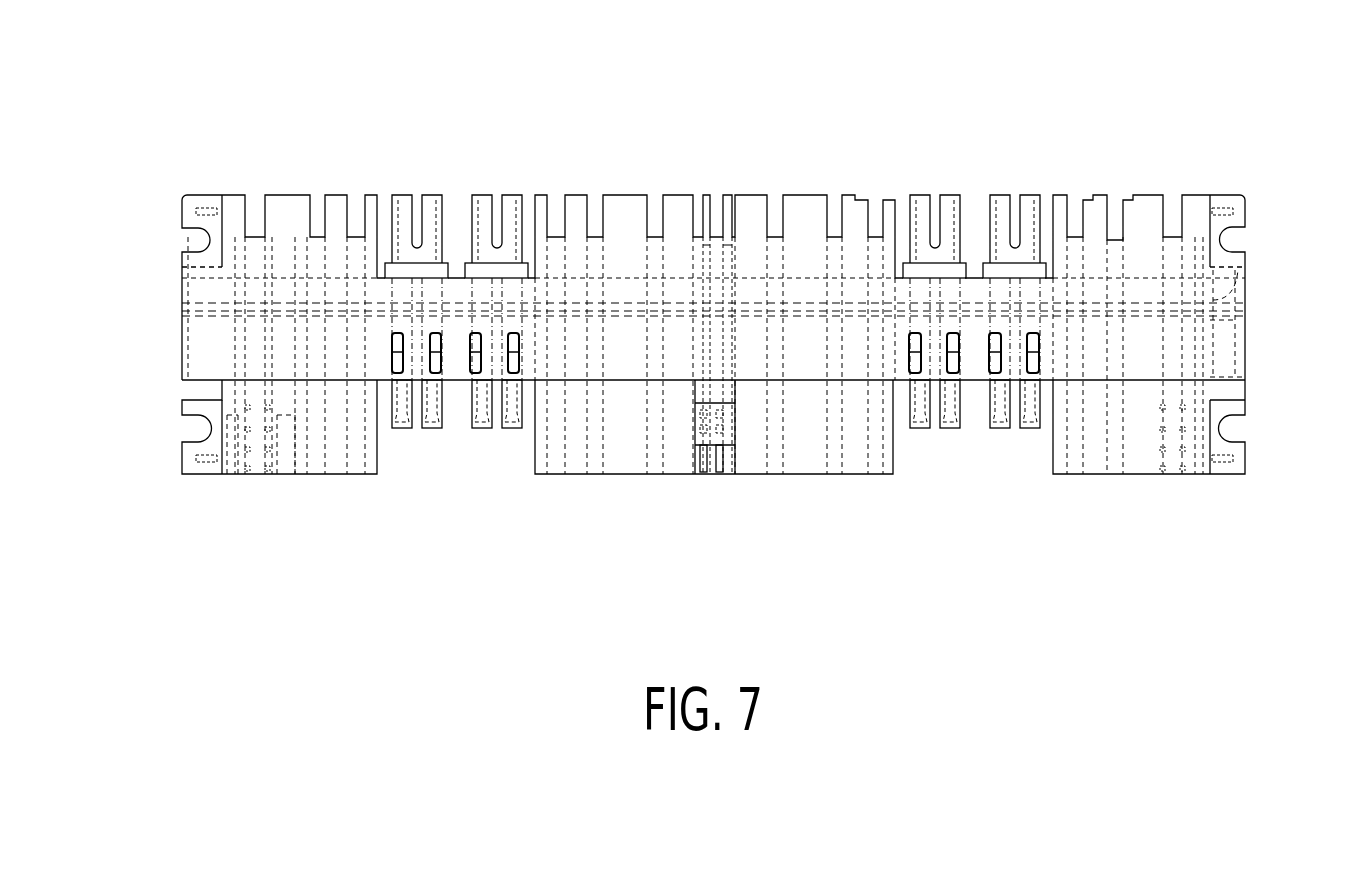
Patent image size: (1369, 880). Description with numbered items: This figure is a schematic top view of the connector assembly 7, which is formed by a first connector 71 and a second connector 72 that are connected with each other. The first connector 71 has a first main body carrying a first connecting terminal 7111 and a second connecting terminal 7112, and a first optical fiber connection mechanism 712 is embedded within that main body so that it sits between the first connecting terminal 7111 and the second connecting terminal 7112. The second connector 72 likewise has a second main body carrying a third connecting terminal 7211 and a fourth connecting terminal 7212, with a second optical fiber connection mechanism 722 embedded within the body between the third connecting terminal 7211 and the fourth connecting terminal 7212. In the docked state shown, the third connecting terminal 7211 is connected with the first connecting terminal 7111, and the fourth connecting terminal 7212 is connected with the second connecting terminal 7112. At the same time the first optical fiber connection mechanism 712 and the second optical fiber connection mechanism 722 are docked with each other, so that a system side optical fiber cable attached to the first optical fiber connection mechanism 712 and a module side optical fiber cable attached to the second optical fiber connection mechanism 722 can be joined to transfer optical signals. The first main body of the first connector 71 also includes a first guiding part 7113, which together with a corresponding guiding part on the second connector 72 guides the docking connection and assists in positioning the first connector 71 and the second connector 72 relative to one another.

The connector assembly 7 is at (1212, 74).
The first connector 71 is at (1228, 390).
The first connecting terminal 7111 is at (1162, 475).
The second connecting terminal 7112 is at (722, 473).
The first guiding part 7113 is at (1222, 336).
The first optical fiber connection mechanism 712 is at (1002, 428).
The second connector 72 is at (1230, 276).
The third connecting terminal 7211 is at (1163, 197).
The fourth connecting terminal 7212 is at (727, 195).
The second optical fiber connection mechanism 722 is at (1022, 197).